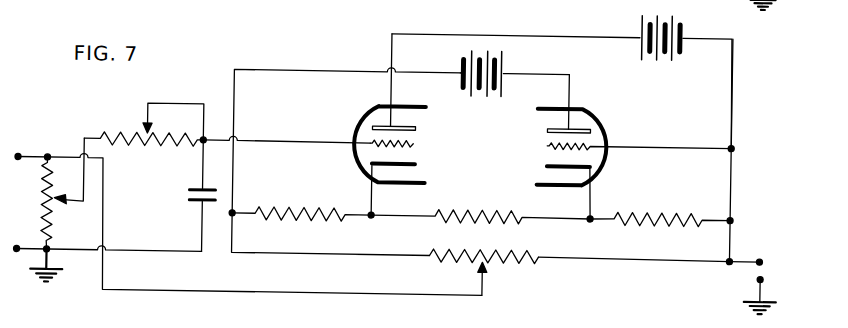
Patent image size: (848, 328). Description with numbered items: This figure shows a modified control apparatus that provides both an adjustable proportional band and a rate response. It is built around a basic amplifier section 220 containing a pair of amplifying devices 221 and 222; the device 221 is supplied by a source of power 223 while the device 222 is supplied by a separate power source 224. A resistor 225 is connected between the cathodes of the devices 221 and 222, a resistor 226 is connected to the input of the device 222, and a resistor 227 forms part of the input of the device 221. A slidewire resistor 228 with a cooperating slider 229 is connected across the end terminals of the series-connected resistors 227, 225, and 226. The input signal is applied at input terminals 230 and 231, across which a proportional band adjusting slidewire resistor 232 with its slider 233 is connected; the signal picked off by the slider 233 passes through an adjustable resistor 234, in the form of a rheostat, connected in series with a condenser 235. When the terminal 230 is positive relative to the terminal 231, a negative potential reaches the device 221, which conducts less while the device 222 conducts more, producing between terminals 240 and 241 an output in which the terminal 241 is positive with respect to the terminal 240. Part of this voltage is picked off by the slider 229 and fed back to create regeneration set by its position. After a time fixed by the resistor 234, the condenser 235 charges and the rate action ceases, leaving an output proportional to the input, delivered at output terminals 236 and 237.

The basic amplifier section 220 is at (507, 156).
The amplifying device 221 is at (361, 119).
The amplifying device 222 is at (600, 114).
The source of power 223 is at (663, 18).
The power source 224 is at (481, 56).
The resistor 225 is at (487, 204).
The resistor 226 is at (672, 208).
The resistor 227 is at (303, 207).
The slidewire resistor 228 is at (489, 250).
The slider 229 is at (488, 269).
The input terminal 230 is at (18, 159).
The input terminal 231 is at (18, 252).
The proportional band adjusting slidewire resistor 232 is at (51, 231).
The slider 233 is at (58, 207).
The adjustable resistor 234 is at (127, 132).
The condenser 235 is at (185, 200).
The output terminal 236 is at (761, 253).
The output terminal 237 is at (758, 276).
The terminal 240 is at (236, 219).
The terminal 241 is at (733, 215).